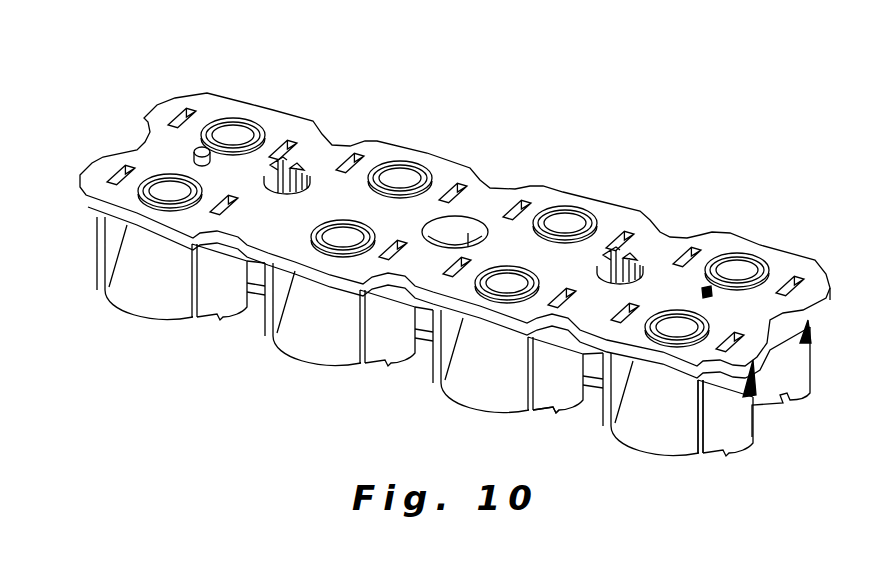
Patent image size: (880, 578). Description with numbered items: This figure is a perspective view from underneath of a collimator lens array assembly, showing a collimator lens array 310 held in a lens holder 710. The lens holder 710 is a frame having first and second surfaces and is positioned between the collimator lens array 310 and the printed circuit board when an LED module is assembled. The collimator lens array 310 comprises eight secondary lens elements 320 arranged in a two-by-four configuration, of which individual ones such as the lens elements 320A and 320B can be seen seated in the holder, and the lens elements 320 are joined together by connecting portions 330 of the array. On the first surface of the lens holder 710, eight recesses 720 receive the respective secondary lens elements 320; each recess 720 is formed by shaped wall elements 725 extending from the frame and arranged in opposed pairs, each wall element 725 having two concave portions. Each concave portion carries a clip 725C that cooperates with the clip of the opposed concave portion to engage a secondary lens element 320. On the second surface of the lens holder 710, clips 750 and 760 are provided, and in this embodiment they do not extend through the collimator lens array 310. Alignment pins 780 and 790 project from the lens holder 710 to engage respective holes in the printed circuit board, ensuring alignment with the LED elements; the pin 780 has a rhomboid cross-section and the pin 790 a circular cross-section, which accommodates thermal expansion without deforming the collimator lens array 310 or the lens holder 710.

The collimator lens array 310 is at (678, 467).
The secondary lens element 320 is at (493, 380).
The first socket ring 320A is at (170, 193).
The first socket cavity 320B is at (160, 323).
The connecting rib 330 is at (258, 287).
The lens holder 710 is at (460, 177).
The recess 720 is at (343, 252).
The wall element 725 is at (733, 433).
The clip 725C is at (557, 413).
The clip 750 is at (280, 162).
The clip 760 is at (617, 253).
The alignment pin 780 is at (706, 289).
The alignment pin 790 is at (201, 150).